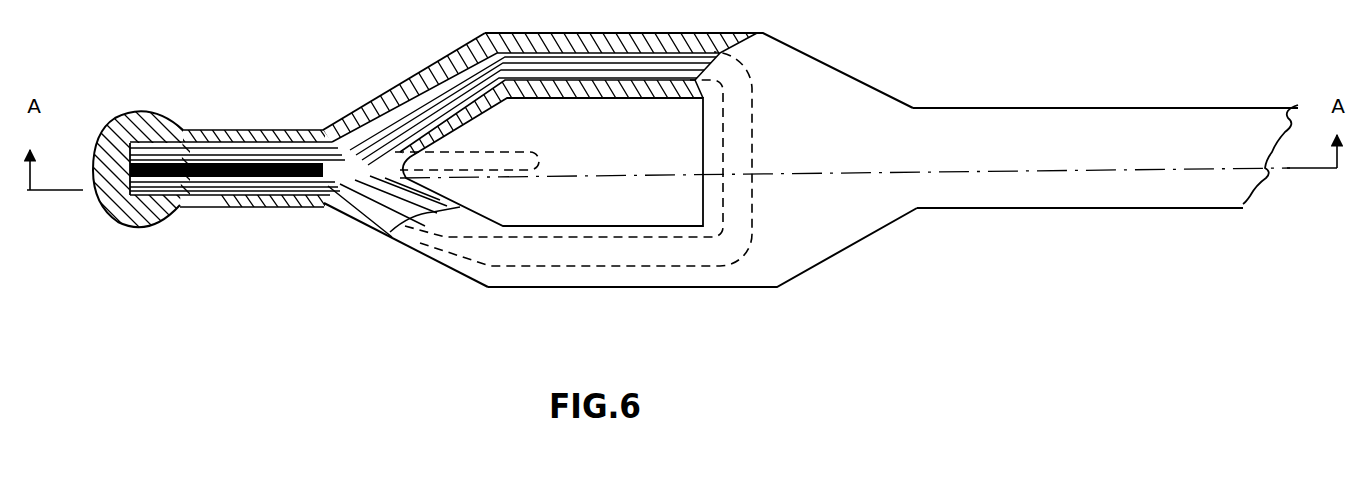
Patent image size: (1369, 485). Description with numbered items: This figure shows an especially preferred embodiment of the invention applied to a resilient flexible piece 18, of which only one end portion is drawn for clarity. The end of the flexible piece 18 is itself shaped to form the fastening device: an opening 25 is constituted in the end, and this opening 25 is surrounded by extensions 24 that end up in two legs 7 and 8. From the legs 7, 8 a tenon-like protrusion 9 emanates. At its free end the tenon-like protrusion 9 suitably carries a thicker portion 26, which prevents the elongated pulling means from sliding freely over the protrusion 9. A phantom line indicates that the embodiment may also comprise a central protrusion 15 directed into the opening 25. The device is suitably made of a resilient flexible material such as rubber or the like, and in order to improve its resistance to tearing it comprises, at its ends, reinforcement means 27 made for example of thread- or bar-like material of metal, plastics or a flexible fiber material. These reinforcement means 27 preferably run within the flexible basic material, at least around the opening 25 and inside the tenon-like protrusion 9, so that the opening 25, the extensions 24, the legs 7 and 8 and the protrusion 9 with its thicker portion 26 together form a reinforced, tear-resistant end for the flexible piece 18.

The leg 7 is at (400, 82).
The leg 8 is at (401, 253).
The tenon-like protrusion 9 is at (250, 214).
The central protrusion 15 is at (478, 168).
The flexible piece 18 is at (1092, 185).
The extensions 24 is at (600, 293).
The opening 25 is at (645, 202).
The thicker portion 26 is at (128, 222).
The reinforcement means 27 is at (215, 155).